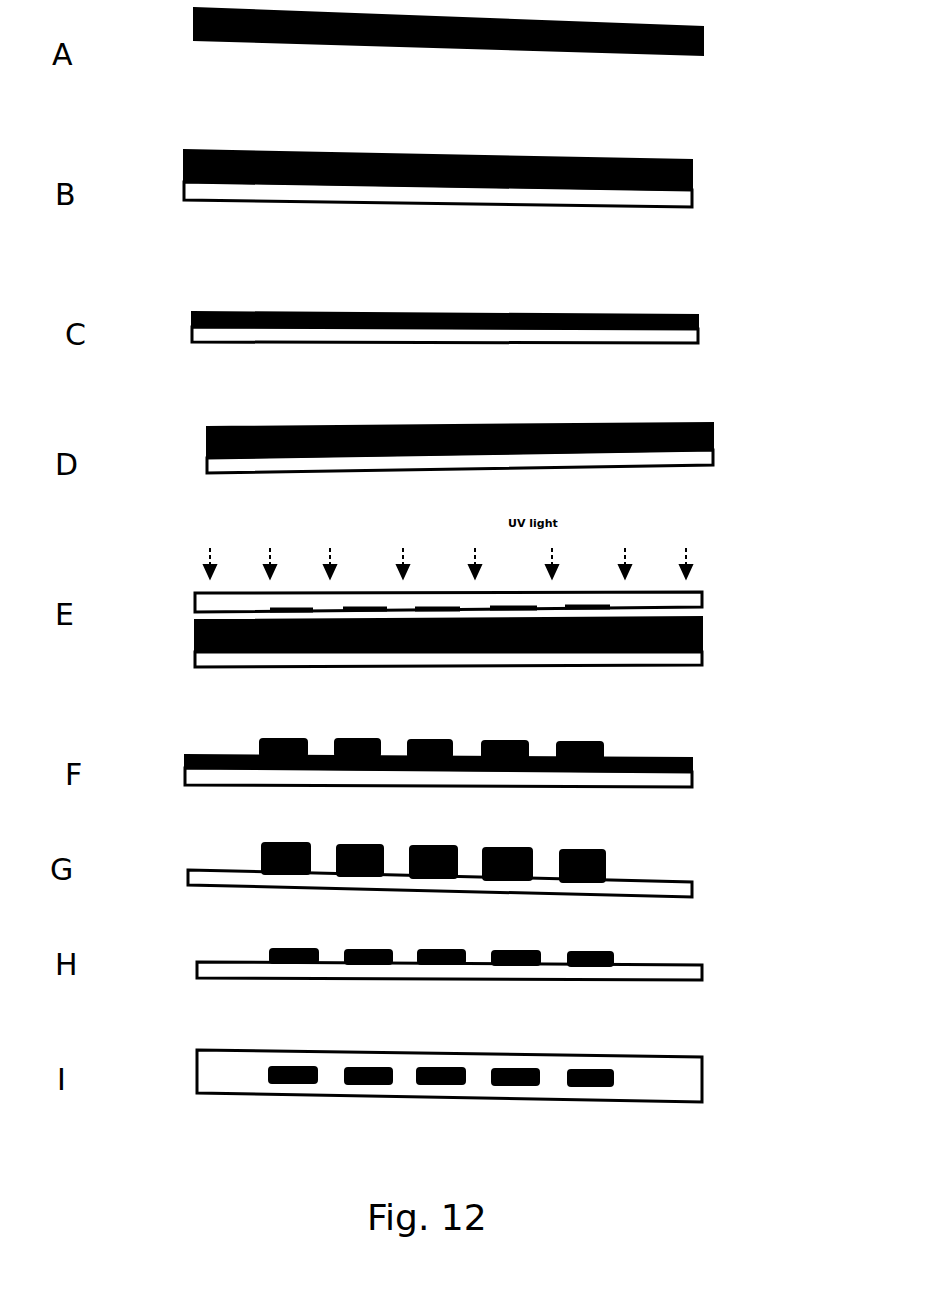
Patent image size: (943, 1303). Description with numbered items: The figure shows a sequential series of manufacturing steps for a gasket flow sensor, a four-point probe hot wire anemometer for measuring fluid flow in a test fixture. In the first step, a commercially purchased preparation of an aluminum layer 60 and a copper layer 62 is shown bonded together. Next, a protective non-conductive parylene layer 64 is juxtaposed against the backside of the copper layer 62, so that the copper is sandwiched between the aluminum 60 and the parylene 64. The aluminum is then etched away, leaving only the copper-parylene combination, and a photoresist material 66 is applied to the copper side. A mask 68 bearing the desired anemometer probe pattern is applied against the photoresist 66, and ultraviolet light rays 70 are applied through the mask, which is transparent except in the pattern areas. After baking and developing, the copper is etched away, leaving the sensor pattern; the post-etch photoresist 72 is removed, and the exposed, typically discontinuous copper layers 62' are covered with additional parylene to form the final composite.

The aluminum layer 60 is at (703, 30).
The copper layer 62 is at (482, 413).
The exposed copper layers 62' is at (492, 971).
The parylene layer 64 is at (692, 205).
The photoresist material 66 is at (713, 425).
The mask 68 is at (702, 592).
The ultraviolet light rays 70 is at (205, 557).
The post-etch photoresist 72 is at (603, 742).